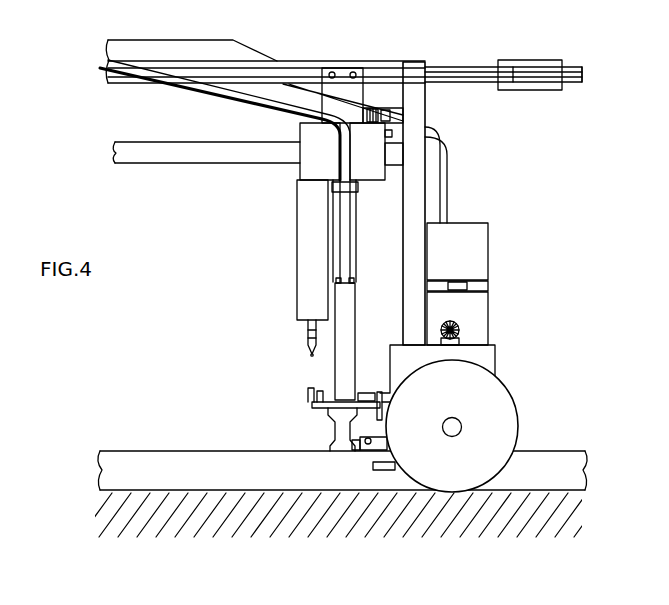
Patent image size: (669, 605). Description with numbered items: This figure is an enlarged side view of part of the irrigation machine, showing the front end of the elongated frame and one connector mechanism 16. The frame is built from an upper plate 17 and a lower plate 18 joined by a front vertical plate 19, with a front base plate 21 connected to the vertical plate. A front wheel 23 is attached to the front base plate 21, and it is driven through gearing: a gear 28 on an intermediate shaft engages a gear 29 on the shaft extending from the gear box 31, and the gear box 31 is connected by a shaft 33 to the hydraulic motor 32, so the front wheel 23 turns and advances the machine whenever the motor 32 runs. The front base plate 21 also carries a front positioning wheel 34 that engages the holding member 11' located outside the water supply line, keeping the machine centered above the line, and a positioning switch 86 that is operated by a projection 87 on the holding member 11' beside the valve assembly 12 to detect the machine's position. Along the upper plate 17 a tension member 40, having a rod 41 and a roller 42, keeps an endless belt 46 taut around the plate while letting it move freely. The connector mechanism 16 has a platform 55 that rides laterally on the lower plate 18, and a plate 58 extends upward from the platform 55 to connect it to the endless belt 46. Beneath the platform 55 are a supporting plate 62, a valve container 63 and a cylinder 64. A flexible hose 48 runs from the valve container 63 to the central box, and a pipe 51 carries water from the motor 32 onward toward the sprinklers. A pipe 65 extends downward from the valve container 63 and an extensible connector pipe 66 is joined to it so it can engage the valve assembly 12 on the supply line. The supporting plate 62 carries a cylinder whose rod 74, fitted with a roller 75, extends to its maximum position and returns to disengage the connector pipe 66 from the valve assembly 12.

The holding member 11' is at (352, 473).
The valve assembly 12 is at (317, 428).
The connector mechanism 16 is at (282, 240).
The upper plate 17 is at (362, 61).
The lower plate 18 is at (203, 158).
The front vertical plate 19 is at (413, 198).
The front base plate 21 is at (488, 362).
The front wheel 23 is at (507, 420).
The gear 28 is at (462, 334).
The gear 29 is at (460, 323).
The gear box 31 is at (478, 313).
The hydraulic motor 32 is at (472, 245).
The shaft 33 is at (458, 286).
The front positioning wheel 34 is at (386, 471).
The tension member 40 is at (517, 52).
The rod 41 is at (453, 66).
The roller 42 is at (577, 67).
The endless belt 46 is at (581, 77).
The flexible hose 48 is at (182, 83).
The pipe 51 is at (158, 48).
The platform 55 is at (300, 173).
The plate 58 is at (343, 73).
The supporting plate 62 is at (298, 305).
The valve container 63 is at (357, 193).
The cylinder 64 is at (357, 240).
The pipe 65 is at (345, 268).
The extensible connector pipe 66 is at (352, 325).
The rod 74 is at (309, 347).
The roller 75 is at (312, 358).
The positioning switch 86 is at (376, 452).
The projection 87 is at (357, 453).